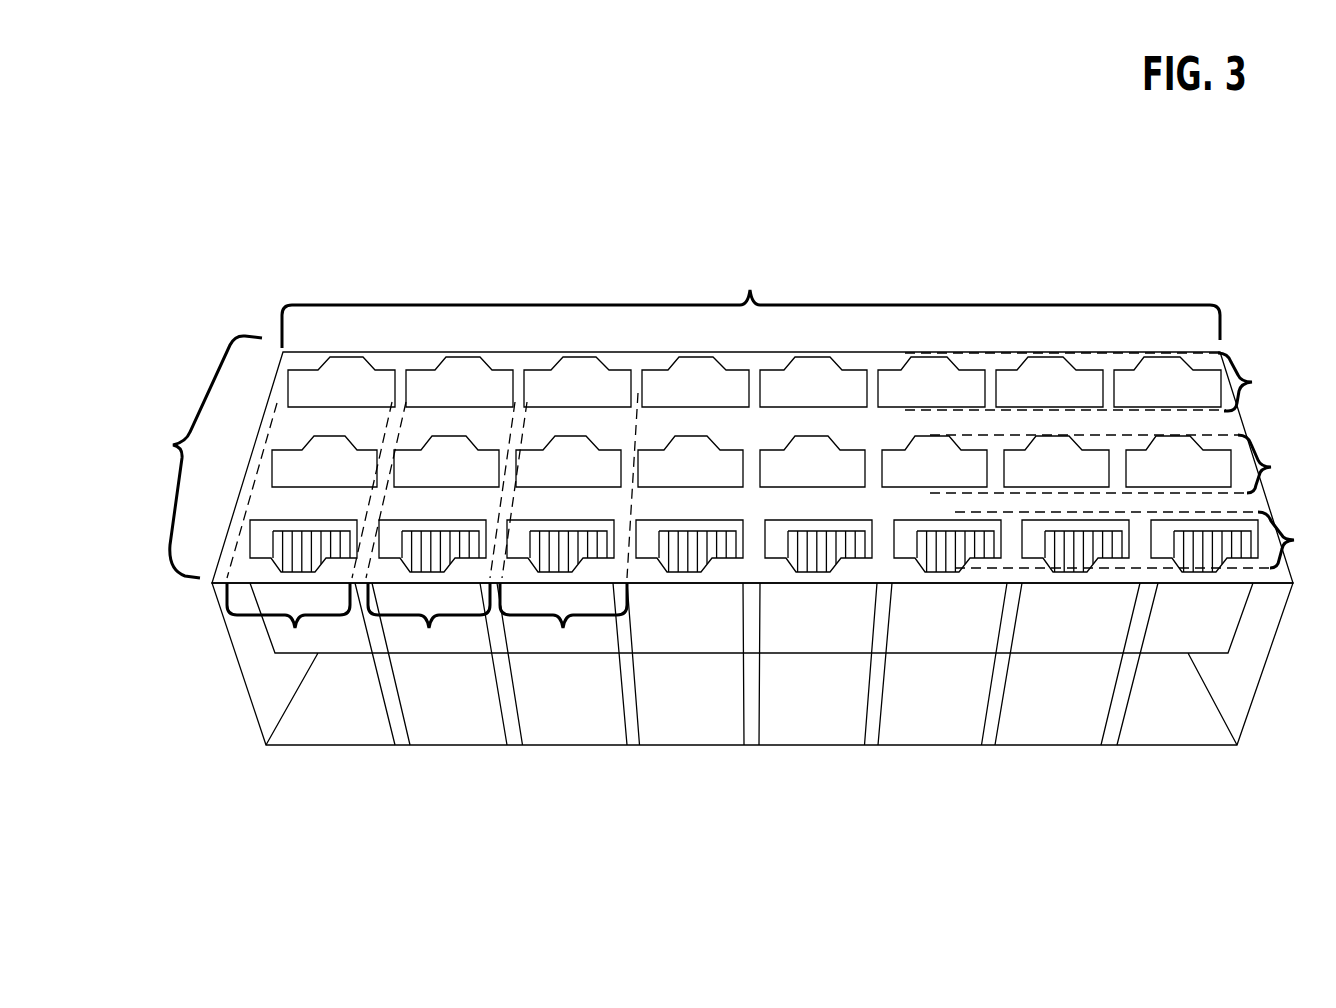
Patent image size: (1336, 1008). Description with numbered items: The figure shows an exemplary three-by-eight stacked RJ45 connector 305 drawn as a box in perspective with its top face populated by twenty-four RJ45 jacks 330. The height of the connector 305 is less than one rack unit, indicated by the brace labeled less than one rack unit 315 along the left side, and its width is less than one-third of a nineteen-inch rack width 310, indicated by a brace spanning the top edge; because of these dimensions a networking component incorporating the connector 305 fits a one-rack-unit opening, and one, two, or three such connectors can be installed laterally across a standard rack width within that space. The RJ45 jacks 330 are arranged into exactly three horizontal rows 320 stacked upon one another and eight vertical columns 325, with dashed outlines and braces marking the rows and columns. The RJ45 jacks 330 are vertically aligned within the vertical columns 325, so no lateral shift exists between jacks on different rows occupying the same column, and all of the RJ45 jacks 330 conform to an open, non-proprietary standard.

The 3×8 stacked RJ45 connector 305 is at (280, 348).
The less than ⅓ of a 19-inch rack width 310 is at (751, 277).
The less than 1U 315 is at (166, 457).
The horizontal rows 320 is at (1296, 535).
The vertical columns 325 is at (558, 634).
The RJ45 jacks 330 is at (754, 466).